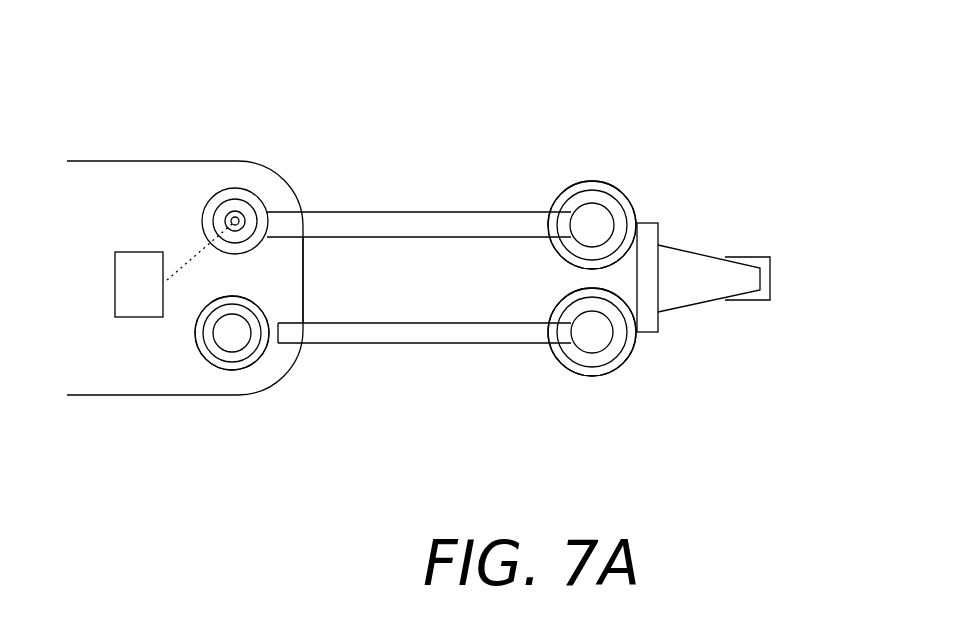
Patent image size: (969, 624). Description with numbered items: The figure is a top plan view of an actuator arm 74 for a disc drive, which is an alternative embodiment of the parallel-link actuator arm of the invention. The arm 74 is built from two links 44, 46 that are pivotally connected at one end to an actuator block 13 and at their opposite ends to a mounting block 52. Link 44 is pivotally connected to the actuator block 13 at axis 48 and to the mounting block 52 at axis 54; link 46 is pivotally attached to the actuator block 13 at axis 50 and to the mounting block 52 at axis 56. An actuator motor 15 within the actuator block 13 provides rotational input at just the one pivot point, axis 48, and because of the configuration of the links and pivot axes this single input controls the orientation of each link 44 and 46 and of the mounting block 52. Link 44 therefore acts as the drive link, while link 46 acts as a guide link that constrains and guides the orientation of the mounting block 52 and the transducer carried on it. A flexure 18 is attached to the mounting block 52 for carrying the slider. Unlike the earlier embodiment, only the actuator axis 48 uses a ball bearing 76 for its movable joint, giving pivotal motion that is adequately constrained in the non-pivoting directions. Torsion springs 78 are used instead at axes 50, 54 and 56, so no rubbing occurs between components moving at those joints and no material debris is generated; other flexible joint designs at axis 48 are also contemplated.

The actuator block 13 is at (103, 200).
The actuator motor 15 is at (132, 290).
The flexure 18 is at (770, 278).
The link 44 is at (403, 217).
The link 46 is at (422, 343).
The axis 48 is at (238, 215).
The axis 50 is at (237, 337).
The mounting block 52 is at (703, 273).
The axis 54 is at (590, 218).
The axis 56 is at (591, 336).
The arm 74 is at (502, 107).
The ball bearing 76 is at (236, 218).
The torsion springs 78 is at (590, 181).